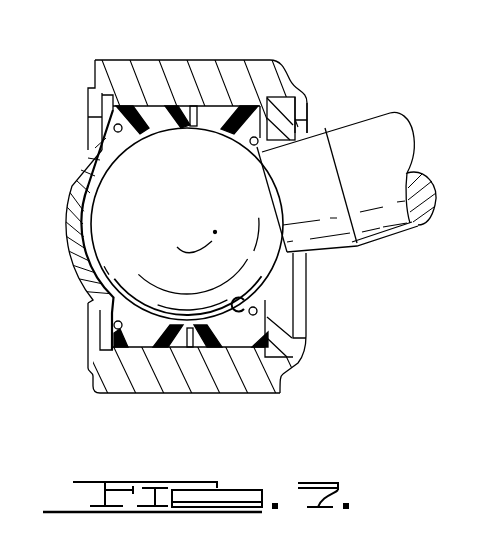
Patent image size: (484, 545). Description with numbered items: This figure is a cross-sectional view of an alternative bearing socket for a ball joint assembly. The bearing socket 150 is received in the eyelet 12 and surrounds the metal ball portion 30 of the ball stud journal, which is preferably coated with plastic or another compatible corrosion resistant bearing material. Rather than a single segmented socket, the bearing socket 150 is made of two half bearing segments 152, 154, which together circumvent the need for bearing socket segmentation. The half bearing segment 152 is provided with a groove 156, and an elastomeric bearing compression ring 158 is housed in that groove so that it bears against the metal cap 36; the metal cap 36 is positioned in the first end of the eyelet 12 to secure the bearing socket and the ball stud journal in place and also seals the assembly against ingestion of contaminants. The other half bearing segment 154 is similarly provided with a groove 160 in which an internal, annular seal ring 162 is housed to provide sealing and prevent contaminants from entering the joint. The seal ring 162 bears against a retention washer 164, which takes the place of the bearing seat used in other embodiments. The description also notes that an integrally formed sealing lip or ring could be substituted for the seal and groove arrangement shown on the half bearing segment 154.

The eyelet 12 is at (105, 394).
The metal ball portion 30 is at (118, 212).
The metal cap 36 is at (77, 285).
The bearing socket 150 is at (257, 110).
The half bearing segment 152 is at (162, 112).
The half bearing segment 154 is at (224, 116).
The groove 156 is at (140, 108).
The elastomeric bearing compression ring 158 is at (113, 127).
The groove 160 is at (258, 311).
The annular seal ring 162 is at (277, 370).
The retention washer 164 is at (262, 148).